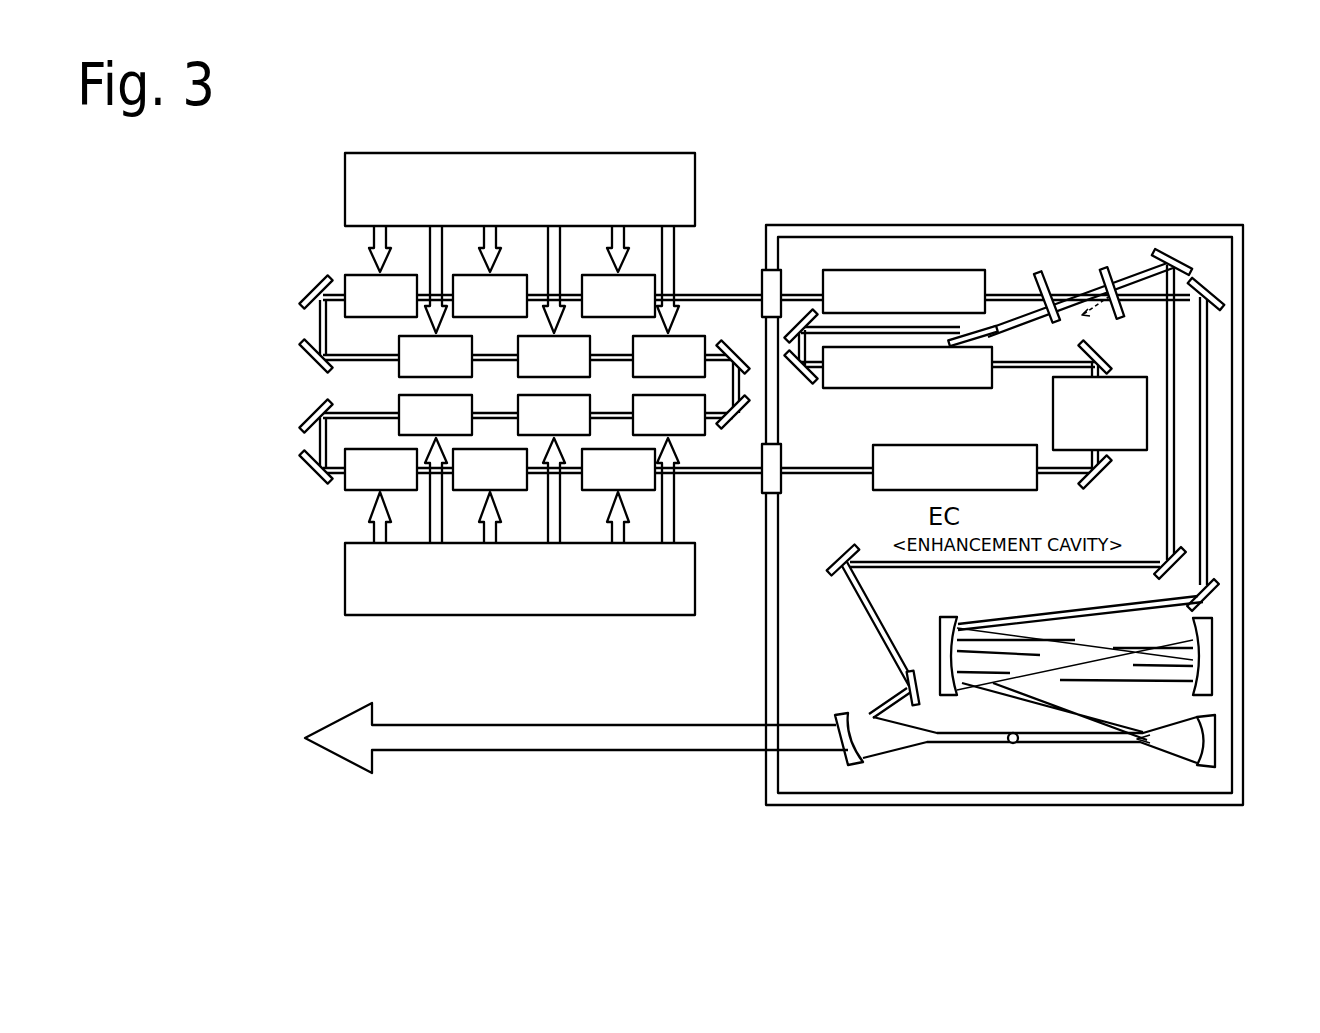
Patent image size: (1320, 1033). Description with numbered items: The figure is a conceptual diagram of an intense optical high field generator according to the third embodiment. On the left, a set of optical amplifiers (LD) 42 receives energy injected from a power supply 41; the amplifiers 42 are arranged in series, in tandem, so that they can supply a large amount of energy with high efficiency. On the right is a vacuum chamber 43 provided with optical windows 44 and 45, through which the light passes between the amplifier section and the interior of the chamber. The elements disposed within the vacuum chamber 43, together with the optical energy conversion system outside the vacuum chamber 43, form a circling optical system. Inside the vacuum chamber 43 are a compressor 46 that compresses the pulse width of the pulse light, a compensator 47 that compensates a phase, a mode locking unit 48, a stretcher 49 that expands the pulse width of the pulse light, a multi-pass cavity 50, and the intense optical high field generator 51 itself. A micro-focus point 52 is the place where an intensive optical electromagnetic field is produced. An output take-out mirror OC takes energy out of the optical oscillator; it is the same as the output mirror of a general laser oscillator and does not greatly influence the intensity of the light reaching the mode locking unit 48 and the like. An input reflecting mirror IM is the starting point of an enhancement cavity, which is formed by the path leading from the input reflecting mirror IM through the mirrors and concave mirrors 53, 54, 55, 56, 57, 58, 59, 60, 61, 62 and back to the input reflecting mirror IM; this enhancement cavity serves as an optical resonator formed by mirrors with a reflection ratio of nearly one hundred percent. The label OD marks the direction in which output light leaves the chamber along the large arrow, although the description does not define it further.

The power supply 41 is at (627, 162).
The optical amplifiers (LD) 42 is at (519, 389).
The vacuum chamber 43 is at (1017, 225).
The optical window 44 is at (762, 272).
The optical window 45 is at (766, 474).
The compressor 46 is at (876, 278).
The compensator 47 is at (882, 381).
The mode locking unit 48 is at (1070, 412).
The stretcher 49 is at (937, 460).
The multi-pass cavity 50 is at (1105, 663).
The intense optical high field generator 51 is at (1077, 745).
The micro-focus point 52 is at (1012, 745).
The mirror 53 is at (1210, 290).
The mirror 54 is at (1218, 598).
The concave mirror 55 is at (937, 630).
The concave mirror 56 is at (1208, 660).
The mirror 57 is at (1217, 743).
The mirror 58 is at (846, 762).
The mirror 59 is at (906, 684).
The mirror 60 is at (841, 552).
The mirror 61 is at (1172, 574).
The mirror 62 is at (1174, 256).
The output take-out mirror OC is at (1043, 271).
The input reflecting mirror IM is at (1105, 266).
The output direction OD is at (843, 720).